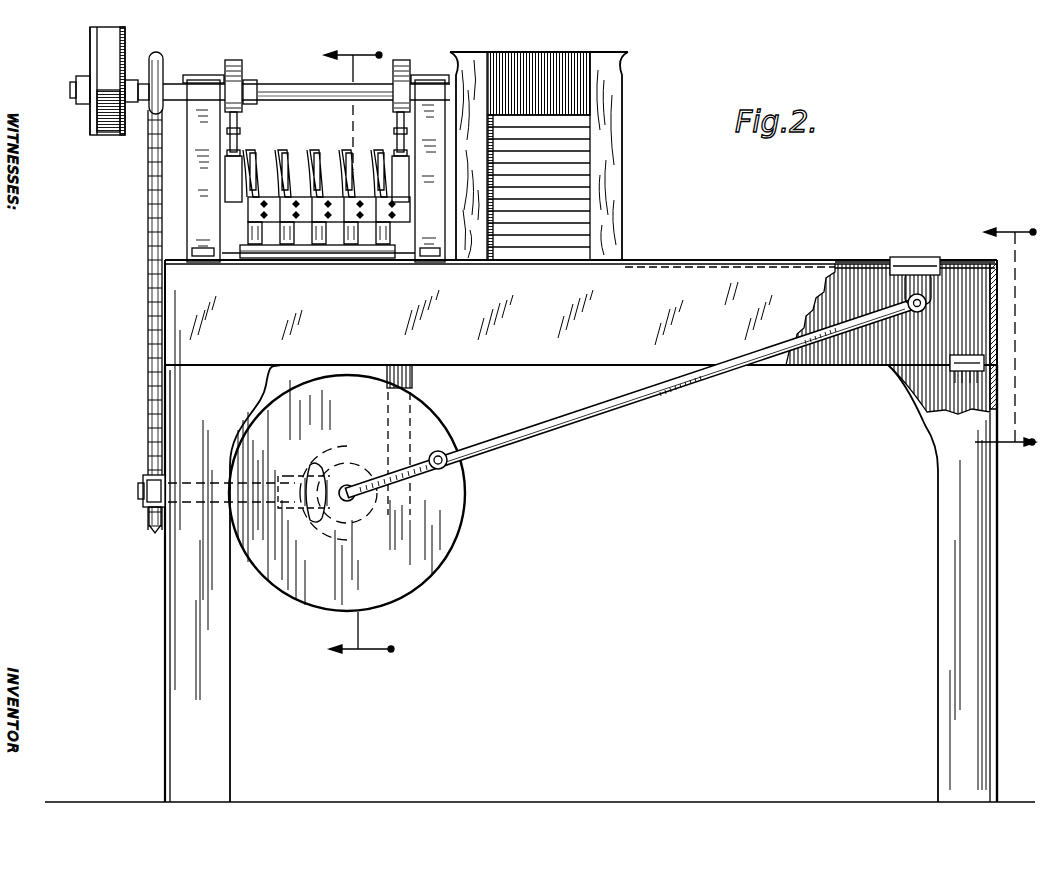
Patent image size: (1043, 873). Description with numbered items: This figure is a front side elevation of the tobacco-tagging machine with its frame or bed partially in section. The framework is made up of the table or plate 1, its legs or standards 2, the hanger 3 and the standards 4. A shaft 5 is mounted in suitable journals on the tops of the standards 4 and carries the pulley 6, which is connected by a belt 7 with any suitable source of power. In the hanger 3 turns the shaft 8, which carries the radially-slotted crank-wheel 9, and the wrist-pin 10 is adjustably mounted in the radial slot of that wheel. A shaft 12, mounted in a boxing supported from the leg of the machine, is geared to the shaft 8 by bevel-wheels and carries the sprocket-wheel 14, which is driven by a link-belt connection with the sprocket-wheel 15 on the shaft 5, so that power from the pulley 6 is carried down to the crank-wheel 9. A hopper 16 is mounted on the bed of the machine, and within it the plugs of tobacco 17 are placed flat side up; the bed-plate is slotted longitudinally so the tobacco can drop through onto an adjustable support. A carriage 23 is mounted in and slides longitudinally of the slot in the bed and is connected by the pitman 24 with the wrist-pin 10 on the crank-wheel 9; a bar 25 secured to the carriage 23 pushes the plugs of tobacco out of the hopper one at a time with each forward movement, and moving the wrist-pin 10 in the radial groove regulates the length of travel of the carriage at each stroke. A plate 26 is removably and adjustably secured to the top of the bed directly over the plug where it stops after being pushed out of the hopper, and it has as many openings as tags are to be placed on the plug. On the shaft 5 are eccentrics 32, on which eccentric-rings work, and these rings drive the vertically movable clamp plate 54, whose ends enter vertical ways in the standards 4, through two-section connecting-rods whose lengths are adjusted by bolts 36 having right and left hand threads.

The table or plate 1 is at (190, 320).
The legs or standards 2 is at (178, 690).
The hanger 3 is at (414, 383).
The standards 4 is at (200, 226).
The shaft 5 is at (296, 88).
The pulley 6 is at (94, 66).
The belt 7 is at (98, 38).
The shaft 8 is at (345, 464).
The crank-wheel 9 is at (462, 493).
The wrist-pin 10 is at (446, 448).
The shaft 12 is at (140, 490).
The sprocket-wheel 14 is at (148, 522).
The sprocket-wheel 15 is at (163, 62).
The hopper 16 is at (535, 64).
The plugs of tobacco 17 is at (539, 156).
The carriage 23 is at (935, 254).
The pitman 24 is at (700, 377).
The bar 25 is at (857, 270).
The plate 26 is at (266, 258).
The eccentrics 32 is at (244, 86).
The bolts 36 is at (240, 130).
The clamp bar 54 is at (330, 226).